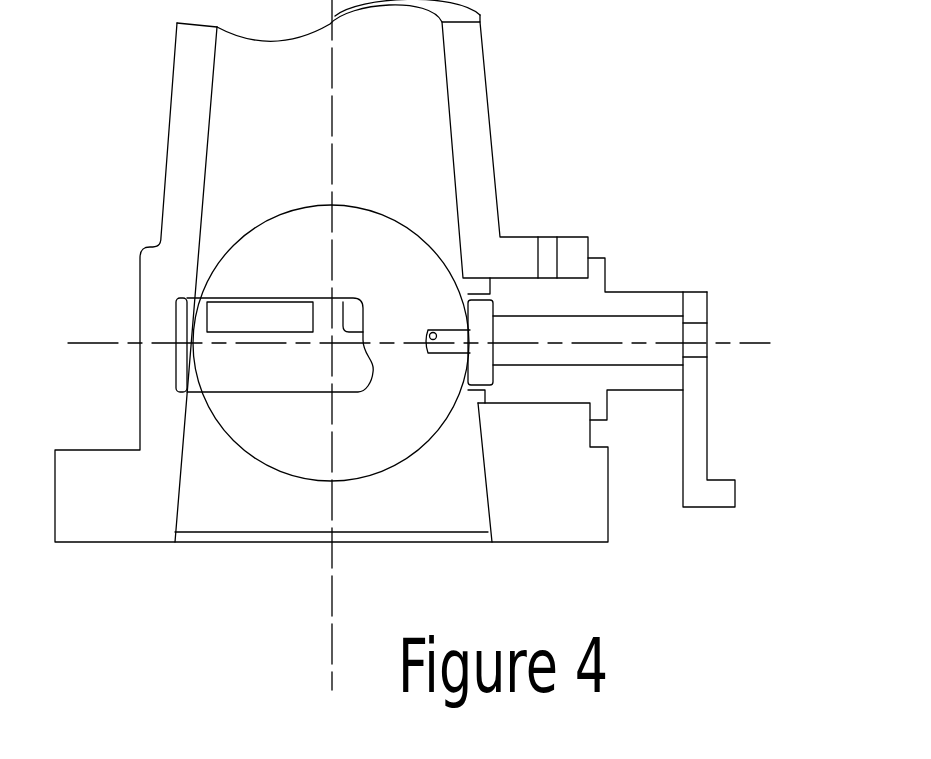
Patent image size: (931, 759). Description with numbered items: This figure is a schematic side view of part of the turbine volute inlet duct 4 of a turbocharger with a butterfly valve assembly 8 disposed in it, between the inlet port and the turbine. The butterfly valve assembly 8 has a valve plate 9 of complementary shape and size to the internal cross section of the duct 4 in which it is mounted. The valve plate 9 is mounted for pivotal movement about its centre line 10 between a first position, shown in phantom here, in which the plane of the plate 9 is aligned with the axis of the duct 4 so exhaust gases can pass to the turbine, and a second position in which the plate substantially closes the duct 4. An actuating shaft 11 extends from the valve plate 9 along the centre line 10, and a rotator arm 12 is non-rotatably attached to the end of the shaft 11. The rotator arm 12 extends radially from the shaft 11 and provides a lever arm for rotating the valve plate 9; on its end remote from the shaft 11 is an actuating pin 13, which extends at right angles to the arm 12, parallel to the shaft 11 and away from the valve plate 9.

The turbine volute inlet duct 4 is at (243, 143).
The butterfly valve assembly 8 is at (420, 222).
The valve plate 9 is at (275, 247).
The centre line 10 is at (102, 345).
The actuating shaft 11 is at (612, 328).
The rotator arm 12 is at (708, 390).
The actuating pin 13 is at (735, 492).